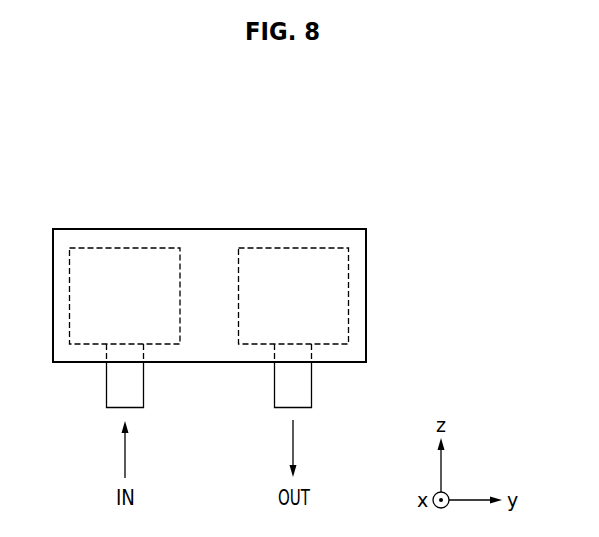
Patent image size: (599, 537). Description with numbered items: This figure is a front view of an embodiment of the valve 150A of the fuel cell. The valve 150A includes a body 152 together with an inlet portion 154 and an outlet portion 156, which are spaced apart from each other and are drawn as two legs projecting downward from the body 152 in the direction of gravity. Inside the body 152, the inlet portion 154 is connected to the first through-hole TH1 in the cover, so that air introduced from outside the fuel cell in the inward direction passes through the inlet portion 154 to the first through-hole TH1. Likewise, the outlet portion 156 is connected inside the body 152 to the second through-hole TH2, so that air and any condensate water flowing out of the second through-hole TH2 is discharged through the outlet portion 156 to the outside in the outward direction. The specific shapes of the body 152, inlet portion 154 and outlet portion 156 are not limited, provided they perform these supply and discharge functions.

The valve 150A is at (401, 168).
The body 152 is at (366, 238).
The inlet portion 154 is at (106, 391).
The outlet portion 156 is at (312, 390).
The first through-hole TH1 is at (113, 293).
The second through-hole TH2 is at (281, 293).